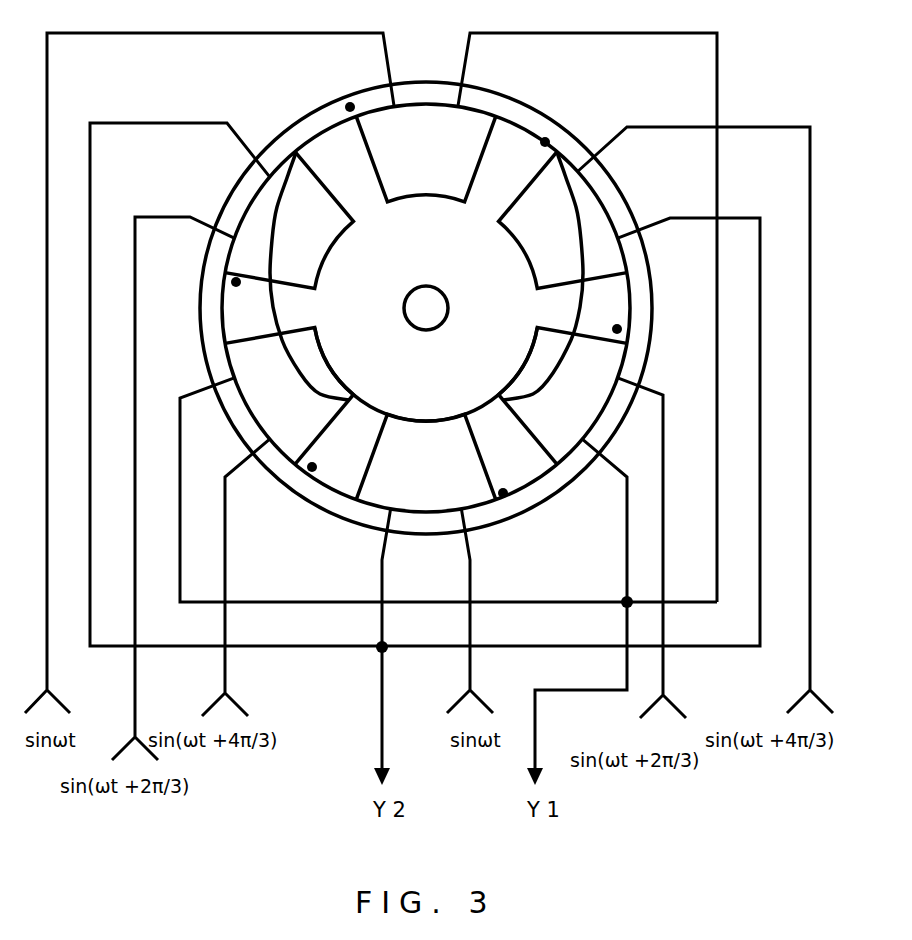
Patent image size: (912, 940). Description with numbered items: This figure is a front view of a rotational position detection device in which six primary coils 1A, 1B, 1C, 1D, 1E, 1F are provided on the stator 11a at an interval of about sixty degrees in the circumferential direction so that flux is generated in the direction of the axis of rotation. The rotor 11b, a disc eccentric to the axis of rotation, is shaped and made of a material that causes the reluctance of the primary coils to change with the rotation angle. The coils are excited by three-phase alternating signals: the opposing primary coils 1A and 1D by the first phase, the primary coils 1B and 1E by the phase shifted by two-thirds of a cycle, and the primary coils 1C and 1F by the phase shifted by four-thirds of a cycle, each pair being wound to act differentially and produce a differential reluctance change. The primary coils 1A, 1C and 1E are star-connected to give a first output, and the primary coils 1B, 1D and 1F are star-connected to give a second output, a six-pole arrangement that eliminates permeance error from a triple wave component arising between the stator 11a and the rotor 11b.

The primary coil 1A is at (423, 126).
The primary coil 1B is at (583, 193).
The primary coil 1C is at (600, 347).
The primary coil 1D is at (422, 495).
The primary coil 1E is at (262, 352).
The primary coil 1F is at (270, 190).
The stator 11a is at (317, 126).
The rotor 11b is at (521, 126).